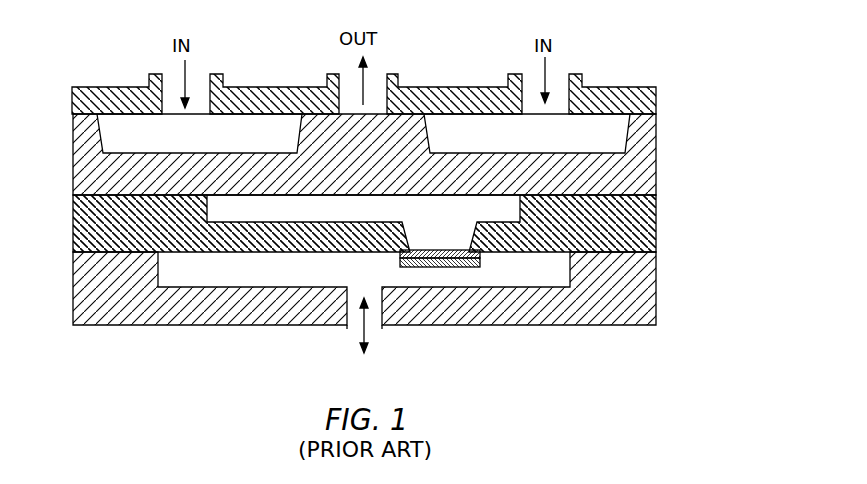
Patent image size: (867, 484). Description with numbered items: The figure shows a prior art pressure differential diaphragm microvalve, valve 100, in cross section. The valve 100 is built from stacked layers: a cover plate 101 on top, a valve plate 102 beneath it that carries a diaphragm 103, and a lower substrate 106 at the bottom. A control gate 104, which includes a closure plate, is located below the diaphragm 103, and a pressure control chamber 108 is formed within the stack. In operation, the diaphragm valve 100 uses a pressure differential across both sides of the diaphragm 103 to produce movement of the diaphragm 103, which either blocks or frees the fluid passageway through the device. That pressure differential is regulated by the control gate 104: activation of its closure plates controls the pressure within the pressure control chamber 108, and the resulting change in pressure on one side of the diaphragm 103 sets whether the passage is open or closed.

The valve 100 is at (728, 82).
The cover plate 101 is at (118, 95).
The valve plate 102 is at (85, 183).
The diaphragm 103 is at (503, 196).
The control gate 104 is at (392, 262).
The lower substrate 106 is at (517, 317).
The pressure control chamber 108 is at (262, 211).